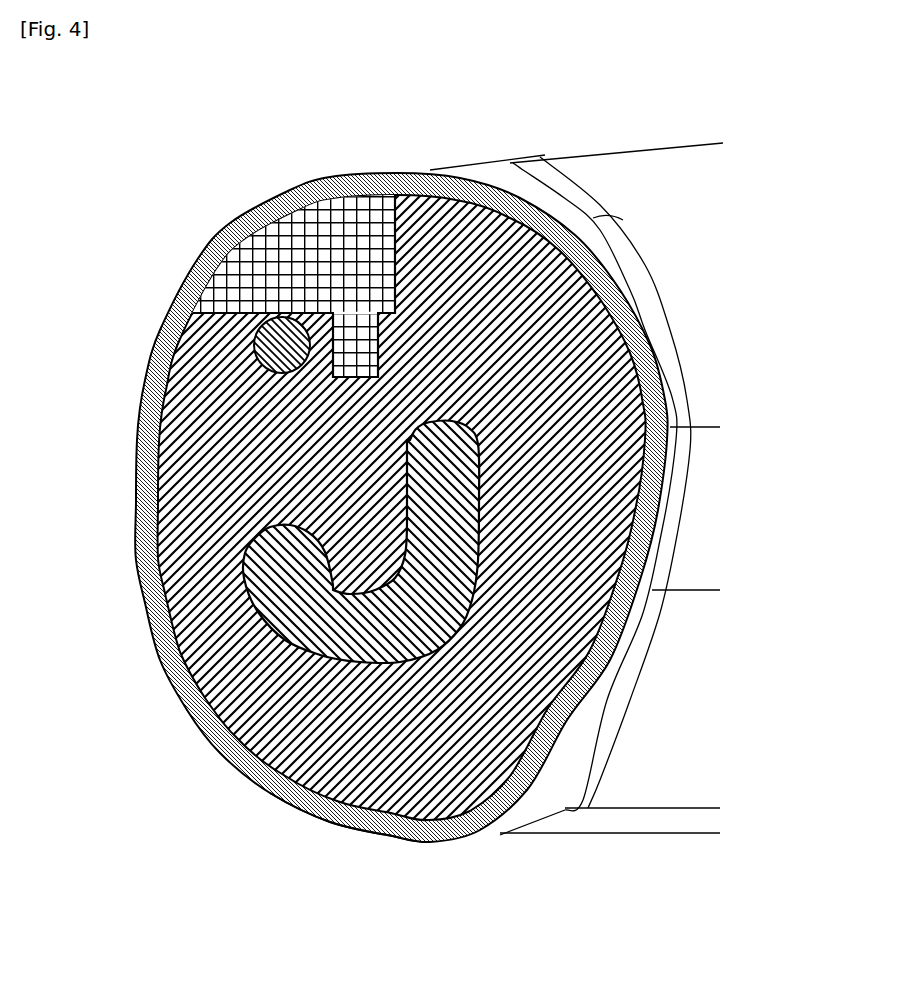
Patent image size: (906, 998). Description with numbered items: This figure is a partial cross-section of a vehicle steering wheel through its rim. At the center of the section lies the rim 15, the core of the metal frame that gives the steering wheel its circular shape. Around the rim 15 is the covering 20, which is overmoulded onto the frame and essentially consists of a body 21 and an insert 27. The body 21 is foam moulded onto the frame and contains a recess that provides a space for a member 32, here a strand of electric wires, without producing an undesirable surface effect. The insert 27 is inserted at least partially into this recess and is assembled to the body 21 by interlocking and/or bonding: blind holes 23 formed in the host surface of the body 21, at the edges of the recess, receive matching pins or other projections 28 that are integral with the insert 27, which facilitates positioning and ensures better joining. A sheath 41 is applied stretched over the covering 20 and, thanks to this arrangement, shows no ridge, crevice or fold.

The rim 15 is at (648, 547).
The covering 20 is at (182, 665).
The body 21 is at (196, 516).
The blind holes 23 is at (348, 423).
The insert 27 is at (298, 188).
The projections 28 is at (397, 309).
The member 32 is at (256, 334).
The sheath 41 is at (333, 823).